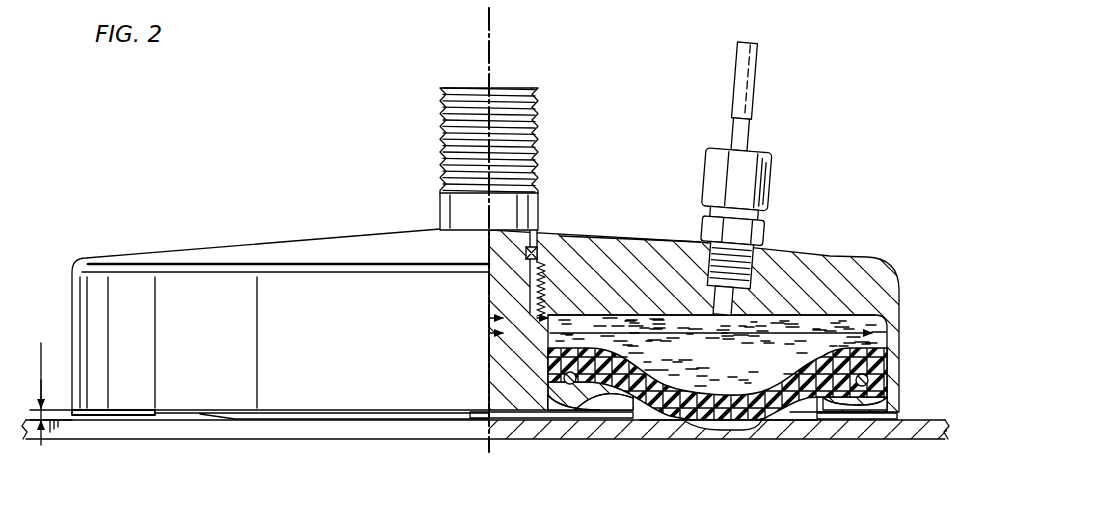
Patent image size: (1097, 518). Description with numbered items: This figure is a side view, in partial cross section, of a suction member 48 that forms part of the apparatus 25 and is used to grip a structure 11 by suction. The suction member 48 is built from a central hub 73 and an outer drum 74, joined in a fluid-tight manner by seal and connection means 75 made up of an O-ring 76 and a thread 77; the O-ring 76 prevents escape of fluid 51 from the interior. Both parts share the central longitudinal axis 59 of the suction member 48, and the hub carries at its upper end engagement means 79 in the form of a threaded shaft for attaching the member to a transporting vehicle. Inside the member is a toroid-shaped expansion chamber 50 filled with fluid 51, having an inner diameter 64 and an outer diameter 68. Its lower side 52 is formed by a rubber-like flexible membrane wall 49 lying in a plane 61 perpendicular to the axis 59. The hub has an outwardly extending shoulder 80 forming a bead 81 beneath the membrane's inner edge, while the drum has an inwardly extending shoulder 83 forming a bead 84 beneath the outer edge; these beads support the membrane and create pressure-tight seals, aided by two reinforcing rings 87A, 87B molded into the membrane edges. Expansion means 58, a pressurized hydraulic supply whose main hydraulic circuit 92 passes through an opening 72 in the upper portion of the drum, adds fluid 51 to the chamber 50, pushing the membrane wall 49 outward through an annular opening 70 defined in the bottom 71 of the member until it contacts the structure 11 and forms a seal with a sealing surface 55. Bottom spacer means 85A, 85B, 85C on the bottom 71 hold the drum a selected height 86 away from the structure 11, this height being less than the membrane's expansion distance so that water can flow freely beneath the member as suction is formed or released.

The structure 11 is at (283, 440).
The apparatus 25 is at (553, 45).
The suction member 48 is at (86, 164).
The flexible membrane wall 49 is at (812, 405).
The expansion chamber 50 is at (882, 333).
The fluid 51 is at (757, 64).
The lower side 52 is at (683, 405).
The sealing surface 55 is at (717, 432).
The expansion means 58 is at (677, 70).
The central longitudinal axis 59 is at (489, 30).
The plane 61 is at (476, 372).
The inner diameter 64 is at (512, 316).
The outer diameter 68 is at (500, 335).
The flexible membrane wall opening 70 is at (772, 430).
The bottom 71 is at (183, 414).
The opening 72 is at (762, 250).
The central hub 73 is at (438, 211).
The outer drum 74 is at (130, 258).
The seal and connection means 75 is at (609, 180).
The O-ring 76 is at (531, 250).
The thread 77 is at (552, 308).
The engagement means 79 is at (443, 113).
The outwardly extending shoulder 80 is at (610, 392).
The bead 81 is at (620, 400).
The inwardly extending shoulder 83 is at (864, 419).
The bead 84 is at (832, 402).
The bottom spacer means 85A is at (113, 416).
The bottom spacer means 85B is at (478, 418).
The bottom spacer means 85C is at (896, 418).
The selected height 86 is at (36, 410).
The reinforcing ring 87A is at (568, 386).
The reinforcing ring 87B is at (864, 376).
The main hydraulic circuit 92 is at (755, 110).